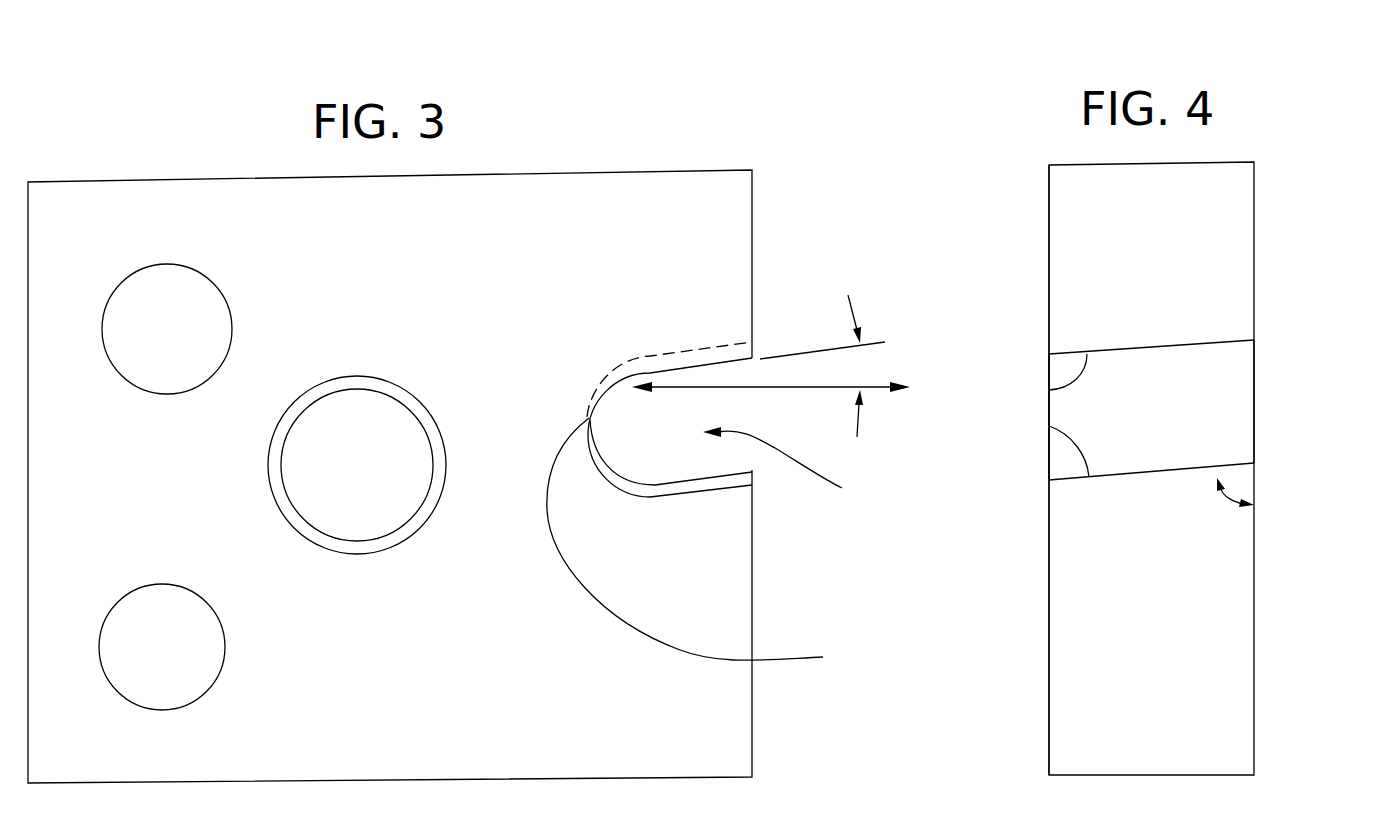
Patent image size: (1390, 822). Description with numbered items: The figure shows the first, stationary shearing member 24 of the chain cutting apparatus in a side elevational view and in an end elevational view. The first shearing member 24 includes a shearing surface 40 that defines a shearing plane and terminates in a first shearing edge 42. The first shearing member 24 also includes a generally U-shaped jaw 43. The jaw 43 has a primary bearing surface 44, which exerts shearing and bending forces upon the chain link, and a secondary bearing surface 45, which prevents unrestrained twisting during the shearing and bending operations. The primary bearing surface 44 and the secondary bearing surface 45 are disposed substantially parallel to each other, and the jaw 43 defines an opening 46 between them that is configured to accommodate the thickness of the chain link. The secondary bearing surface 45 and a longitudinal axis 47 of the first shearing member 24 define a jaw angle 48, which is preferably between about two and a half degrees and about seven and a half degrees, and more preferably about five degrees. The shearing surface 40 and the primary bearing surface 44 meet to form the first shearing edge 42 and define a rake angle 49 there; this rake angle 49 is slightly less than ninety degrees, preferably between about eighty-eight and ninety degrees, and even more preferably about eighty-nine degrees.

In FIG. 3, the first shearing member 24 is at (116, 152).
In FIG. 4, the first shearing member 24 is at (1043, 138).
In FIG. 4, the shearing surface 40 is at (1254, 265).
In FIG. 3, the first shearing edge 42 is at (717, 472).
In FIG. 4, the first shearing edge 42 is at (1254, 463).
In FIG. 3, the jaw 43 is at (703, 541).
In FIG. 4, the jaw 43 is at (1227, 392).
In FIG. 3, the primary bearing surface 44 is at (684, 486).
In FIG. 4, the primary bearing surface 44 is at (1049, 426).
In FIG. 3, the secondary bearing surface 45 is at (683, 353).
In FIG. 4, the secondary bearing surface 45 is at (1049, 390).
In FIG. 3, the opening 46 is at (791, 463).
In FIG. 3, the longitudinal axis 47 is at (796, 388).
In FIG. 3, the jaw angle 48 is at (863, 360).
In FIG. 4, the rake angle 49 is at (1222, 503).